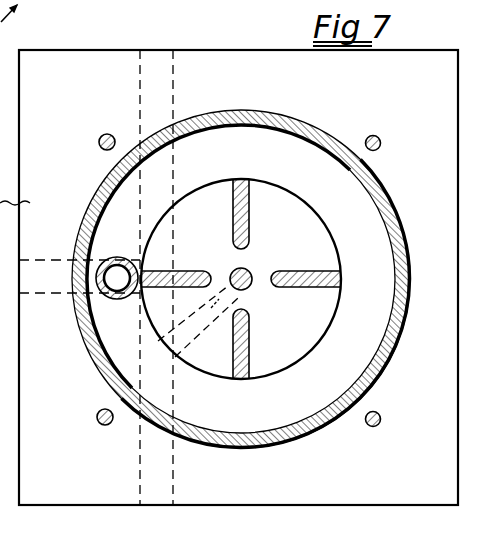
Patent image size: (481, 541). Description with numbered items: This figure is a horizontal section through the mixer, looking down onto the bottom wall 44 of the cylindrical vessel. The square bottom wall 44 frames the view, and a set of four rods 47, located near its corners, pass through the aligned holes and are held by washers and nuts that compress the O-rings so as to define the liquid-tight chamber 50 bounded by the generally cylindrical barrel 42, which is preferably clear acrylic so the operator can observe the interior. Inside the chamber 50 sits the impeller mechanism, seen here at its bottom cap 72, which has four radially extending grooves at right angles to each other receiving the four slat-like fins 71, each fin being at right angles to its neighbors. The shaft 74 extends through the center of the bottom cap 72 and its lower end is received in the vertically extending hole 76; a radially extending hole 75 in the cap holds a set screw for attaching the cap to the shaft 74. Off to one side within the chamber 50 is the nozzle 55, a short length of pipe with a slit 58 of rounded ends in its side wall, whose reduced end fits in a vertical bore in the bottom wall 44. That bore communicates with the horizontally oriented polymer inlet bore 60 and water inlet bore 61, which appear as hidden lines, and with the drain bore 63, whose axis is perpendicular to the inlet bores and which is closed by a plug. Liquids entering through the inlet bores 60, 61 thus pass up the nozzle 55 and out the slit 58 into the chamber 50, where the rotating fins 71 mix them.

The barrel 42 is at (388, 207).
The bottom wall 44 is at (96, 2).
The rods 47 is at (100, 148).
The chamber 50 is at (398, 240).
The nozzle 55 is at (118, 300).
The slit 58 is at (143, 273).
The polymer inlet bore 60 is at (160, 63).
The water inlet bore 61 is at (167, 492).
The drain bore 63 is at (54, 293).
The fins 71 is at (251, 200).
The bottom cap 72 is at (317, 235).
The shaft 74 is at (247, 269).
The radially extending hole 75 is at (190, 333).
The vertically extending hole 76 is at (240, 3).